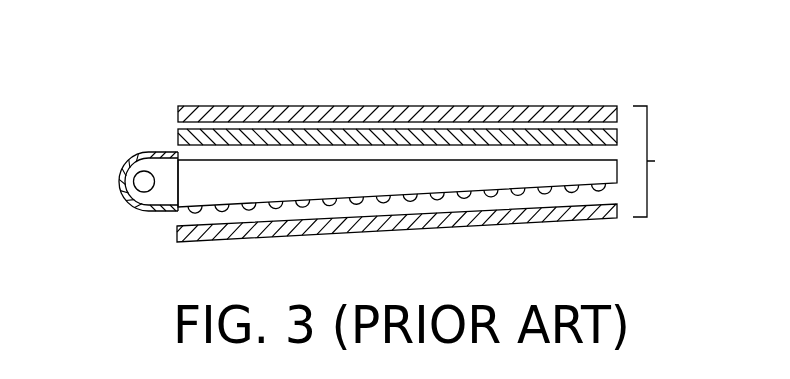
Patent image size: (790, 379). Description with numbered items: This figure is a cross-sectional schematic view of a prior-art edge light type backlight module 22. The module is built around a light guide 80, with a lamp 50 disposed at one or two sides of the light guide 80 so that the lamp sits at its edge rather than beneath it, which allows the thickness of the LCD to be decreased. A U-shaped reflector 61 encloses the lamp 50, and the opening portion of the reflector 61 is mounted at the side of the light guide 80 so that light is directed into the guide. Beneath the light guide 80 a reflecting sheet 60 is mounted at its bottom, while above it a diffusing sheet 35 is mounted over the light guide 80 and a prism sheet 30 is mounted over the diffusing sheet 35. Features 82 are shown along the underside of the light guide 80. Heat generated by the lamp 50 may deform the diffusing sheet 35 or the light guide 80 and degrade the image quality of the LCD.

The edge light type backlight module 22 is at (659, 161).
The prism sheet 30 is at (308, 106).
The diffusing sheet 35 is at (441, 132).
The lamp 50 is at (144, 182).
The reflecting sheet 60 is at (312, 236).
The U-shaped reflector 61 is at (152, 211).
The light guide 80 is at (483, 191).
The protrusion 82 is at (546, 193).